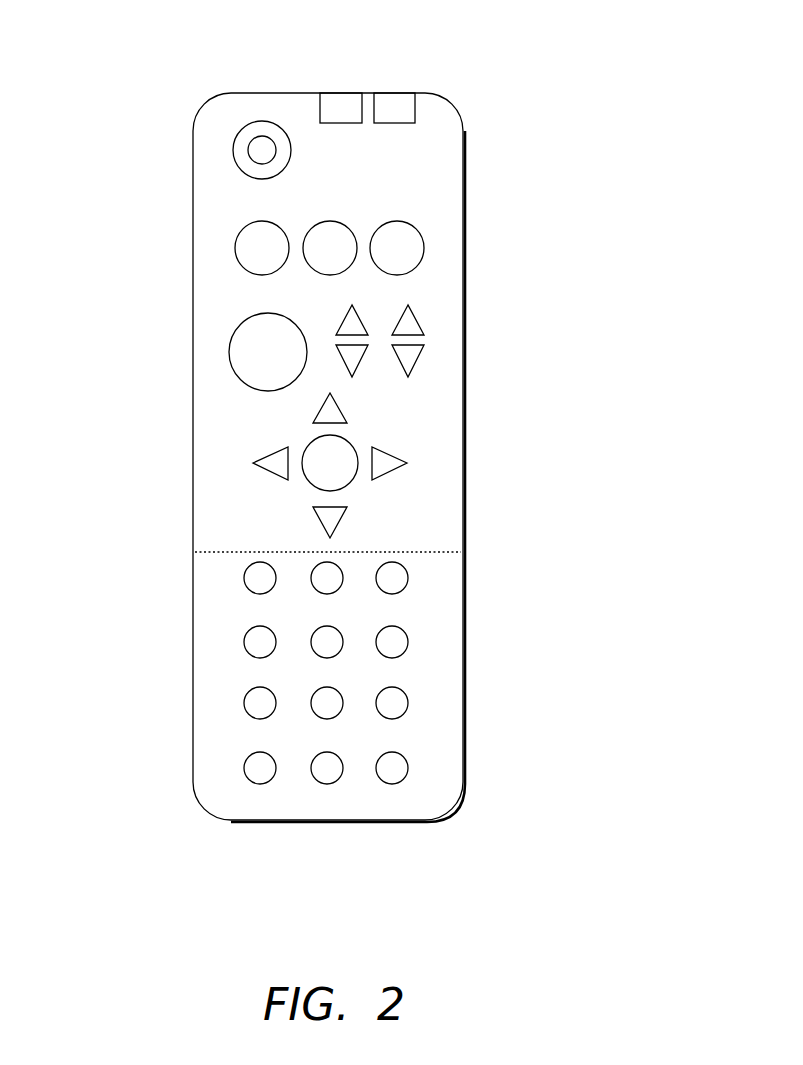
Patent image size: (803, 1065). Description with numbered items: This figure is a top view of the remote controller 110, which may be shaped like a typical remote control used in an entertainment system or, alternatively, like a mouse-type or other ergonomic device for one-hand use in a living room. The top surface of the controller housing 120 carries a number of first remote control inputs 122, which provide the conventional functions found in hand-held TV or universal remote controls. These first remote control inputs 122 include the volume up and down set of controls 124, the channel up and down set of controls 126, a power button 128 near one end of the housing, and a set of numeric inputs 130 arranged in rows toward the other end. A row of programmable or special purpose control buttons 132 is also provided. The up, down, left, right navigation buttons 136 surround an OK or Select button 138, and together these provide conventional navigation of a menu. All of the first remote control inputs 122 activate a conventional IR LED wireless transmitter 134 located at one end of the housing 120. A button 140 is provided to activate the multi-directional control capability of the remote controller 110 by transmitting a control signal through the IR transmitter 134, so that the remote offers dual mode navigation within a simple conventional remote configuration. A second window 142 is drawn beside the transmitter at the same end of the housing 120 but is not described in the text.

The remote controller 110 is at (365, 415).
The controller housing 120 is at (457, 702).
The first remote control inputs 122 is at (442, 297).
The volume up and down set of controls 124 is at (420, 359).
The channel up and down set of controls 126 is at (360, 318).
The power button 128 is at (243, 150).
The set of numeric inputs 130 is at (408, 637).
The programmable or special purpose control buttons 132 is at (235, 247).
The IR LED wireless transmitter 134 is at (343, 100).
The up, down, left, right navigation buttons 136 is at (250, 457).
The OK or Select button 138 is at (348, 448).
The button 140 is at (243, 357).
The receiver window 142 is at (410, 95).